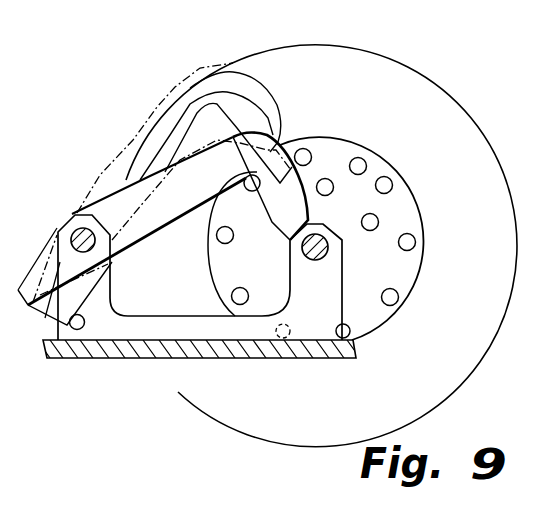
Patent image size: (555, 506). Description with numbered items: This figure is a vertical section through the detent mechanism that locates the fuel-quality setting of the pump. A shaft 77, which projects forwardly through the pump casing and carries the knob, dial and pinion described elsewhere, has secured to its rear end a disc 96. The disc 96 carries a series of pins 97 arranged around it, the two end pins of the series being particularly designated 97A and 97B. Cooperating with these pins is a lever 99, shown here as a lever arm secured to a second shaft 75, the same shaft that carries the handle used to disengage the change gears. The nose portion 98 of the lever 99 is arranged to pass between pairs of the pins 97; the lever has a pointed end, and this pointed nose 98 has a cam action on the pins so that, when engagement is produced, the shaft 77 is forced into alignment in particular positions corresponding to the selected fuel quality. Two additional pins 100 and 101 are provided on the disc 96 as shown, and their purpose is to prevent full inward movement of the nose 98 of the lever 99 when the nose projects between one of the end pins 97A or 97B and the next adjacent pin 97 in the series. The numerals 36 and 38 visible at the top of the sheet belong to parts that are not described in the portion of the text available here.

The element of adjacent figure 36 is at (45, 6).
The element of adjacent figure 38 is at (196, 7).
The shaft 75 is at (75, 232).
The shaft 77 is at (315, 260).
The disc 96 is at (342, 147).
The pins 97 is at (396, 297).
The end pin 97A is at (392, 184).
The end pin 97B is at (362, 163).
The nose portion 98 is at (312, 208).
The lever 99 is at (125, 210).
The pin 100 is at (370, 230).
The pin 101 is at (325, 178).